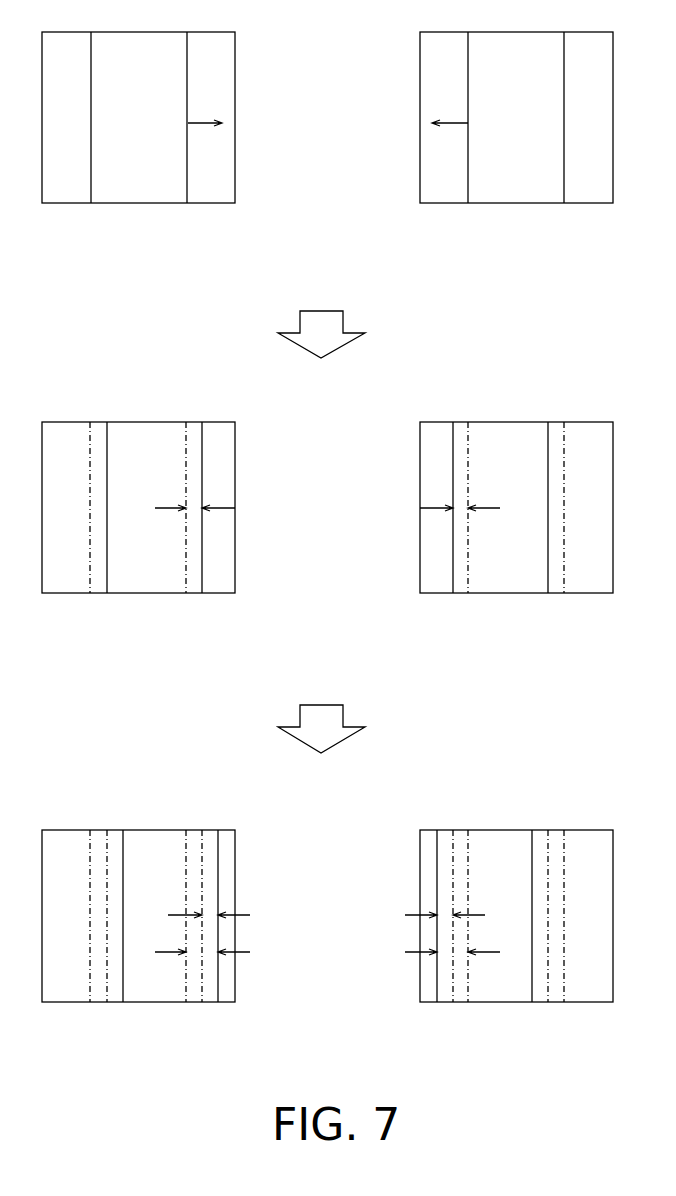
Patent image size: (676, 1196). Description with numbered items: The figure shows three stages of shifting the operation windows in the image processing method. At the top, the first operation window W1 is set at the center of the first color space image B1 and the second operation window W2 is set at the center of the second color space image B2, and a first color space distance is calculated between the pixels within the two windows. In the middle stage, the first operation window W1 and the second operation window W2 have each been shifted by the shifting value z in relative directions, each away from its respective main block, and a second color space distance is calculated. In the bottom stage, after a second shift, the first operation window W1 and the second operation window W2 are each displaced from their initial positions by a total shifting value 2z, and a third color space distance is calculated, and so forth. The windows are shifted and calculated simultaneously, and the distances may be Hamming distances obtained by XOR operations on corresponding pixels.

The first color space image B1 is at (445, 203).
The second color space image B2 is at (68, 203).
The first operation window W1 is at (564, 195).
The second operation window W2 is at (187, 195).
The shifting value z is at (327, 701).
The total shifting value 2z is at (210, 955).